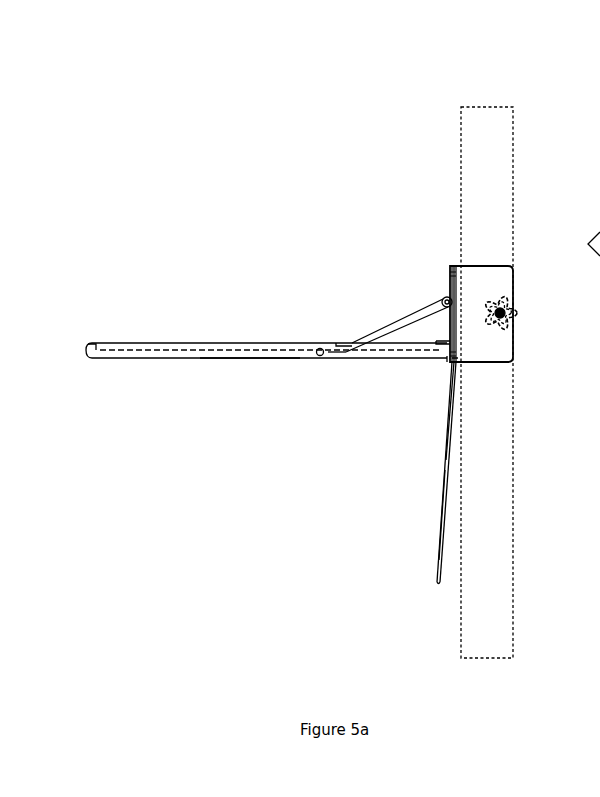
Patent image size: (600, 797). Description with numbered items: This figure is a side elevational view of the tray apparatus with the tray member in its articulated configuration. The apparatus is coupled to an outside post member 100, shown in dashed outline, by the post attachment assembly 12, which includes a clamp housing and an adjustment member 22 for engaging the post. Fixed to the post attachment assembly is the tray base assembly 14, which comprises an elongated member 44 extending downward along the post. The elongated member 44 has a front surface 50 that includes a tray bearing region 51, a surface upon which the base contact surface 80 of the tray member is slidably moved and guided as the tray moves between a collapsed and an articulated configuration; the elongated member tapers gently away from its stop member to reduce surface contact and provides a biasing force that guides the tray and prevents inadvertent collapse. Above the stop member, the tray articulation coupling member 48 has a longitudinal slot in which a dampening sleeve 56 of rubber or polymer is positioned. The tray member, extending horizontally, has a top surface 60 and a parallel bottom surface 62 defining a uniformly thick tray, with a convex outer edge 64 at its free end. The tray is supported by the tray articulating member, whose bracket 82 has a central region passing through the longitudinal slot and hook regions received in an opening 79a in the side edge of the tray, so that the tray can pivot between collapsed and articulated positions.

The post member 100 is at (489, 105).
The post attachment assembly 12 is at (478, 268).
The adjustment member 22 is at (522, 302).
The tray articulation coupling member 48 is at (420, 248).
The bracket 82 is at (411, 307).
The top surface 60 is at (190, 341).
The outer edge 64 is at (86, 353).
The bottom surface 62 is at (246, 360).
The opening 79a is at (322, 357).
The base contact surface 80 is at (441, 357).
The front surface 50 is at (445, 488).
The tray bearing region 51 is at (446, 421).
The elongated member 44 is at (440, 510).
The tray base assembly 14 is at (449, 438).
The dampening sleeve 56 is at (455, 305).